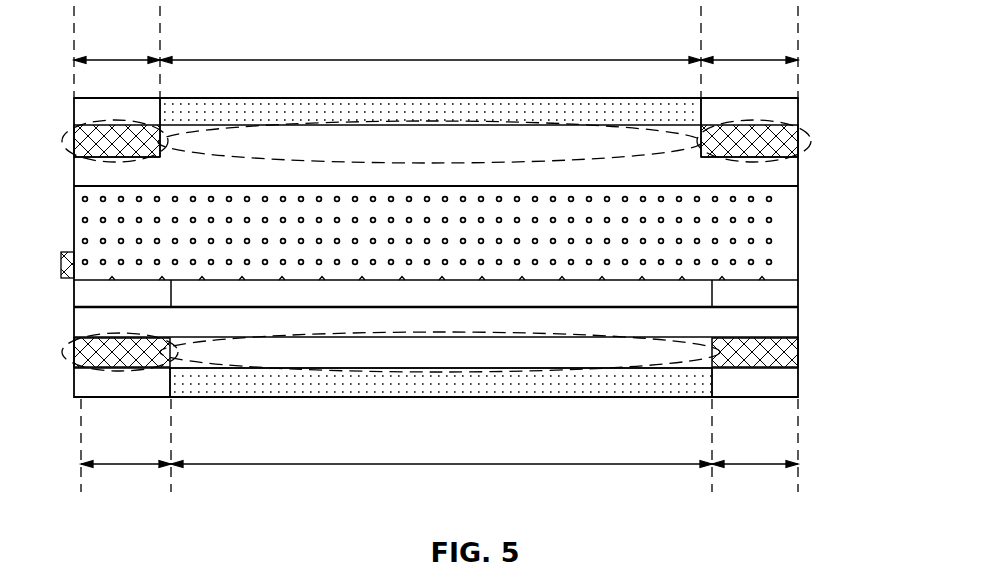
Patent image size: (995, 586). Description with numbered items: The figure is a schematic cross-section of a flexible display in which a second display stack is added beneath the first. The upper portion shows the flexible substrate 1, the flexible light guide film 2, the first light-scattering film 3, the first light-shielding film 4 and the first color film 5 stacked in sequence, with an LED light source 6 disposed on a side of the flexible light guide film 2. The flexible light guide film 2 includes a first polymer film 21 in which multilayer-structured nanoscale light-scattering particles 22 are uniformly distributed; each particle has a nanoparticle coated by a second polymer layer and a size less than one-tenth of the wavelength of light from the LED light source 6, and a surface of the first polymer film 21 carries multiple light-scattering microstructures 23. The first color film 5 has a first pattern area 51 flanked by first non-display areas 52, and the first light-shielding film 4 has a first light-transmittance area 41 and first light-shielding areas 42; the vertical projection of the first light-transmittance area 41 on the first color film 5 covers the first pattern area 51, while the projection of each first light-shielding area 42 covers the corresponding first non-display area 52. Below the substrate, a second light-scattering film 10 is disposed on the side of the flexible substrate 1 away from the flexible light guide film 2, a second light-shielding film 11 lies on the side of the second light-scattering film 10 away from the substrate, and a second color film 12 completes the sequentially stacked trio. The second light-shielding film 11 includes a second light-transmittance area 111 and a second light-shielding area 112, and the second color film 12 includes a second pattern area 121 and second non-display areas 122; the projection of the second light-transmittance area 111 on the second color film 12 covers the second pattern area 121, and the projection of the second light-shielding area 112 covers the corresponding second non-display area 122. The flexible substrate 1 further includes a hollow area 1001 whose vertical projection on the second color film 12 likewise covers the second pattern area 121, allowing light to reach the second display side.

The flexible substrate 1 is at (766, 297).
The flexible light guide film 2 is at (491, 234).
The first polymer film 21 is at (786, 192).
The multilayer-structured nanoscale light-scattering particles 22 is at (773, 214).
The light-scattering microstructures 23 is at (463, 273).
The first light-scattering film 3 is at (770, 166).
The first light-shielding film 4 is at (770, 146).
The first light-transmittance area 41 is at (525, 122).
The first light-shielding areas 42 is at (718, 124).
The first color film 5 is at (769, 116).
The first pattern area 51 is at (430, 49).
The first non-display areas 52 is at (436, 48).
The LED light source 6 is at (63, 284).
The second light-scattering film 10 is at (778, 329).
The second light-shielding film 11 is at (783, 359).
The second color film 12 is at (778, 386).
The second light-transmittance area 111 is at (373, 372).
The second light-shielding area 112 is at (62, 358).
The second pattern area 121 is at (441, 480).
The second non-display areas 122 is at (439, 480).
The hollow area 1001 is at (238, 300).